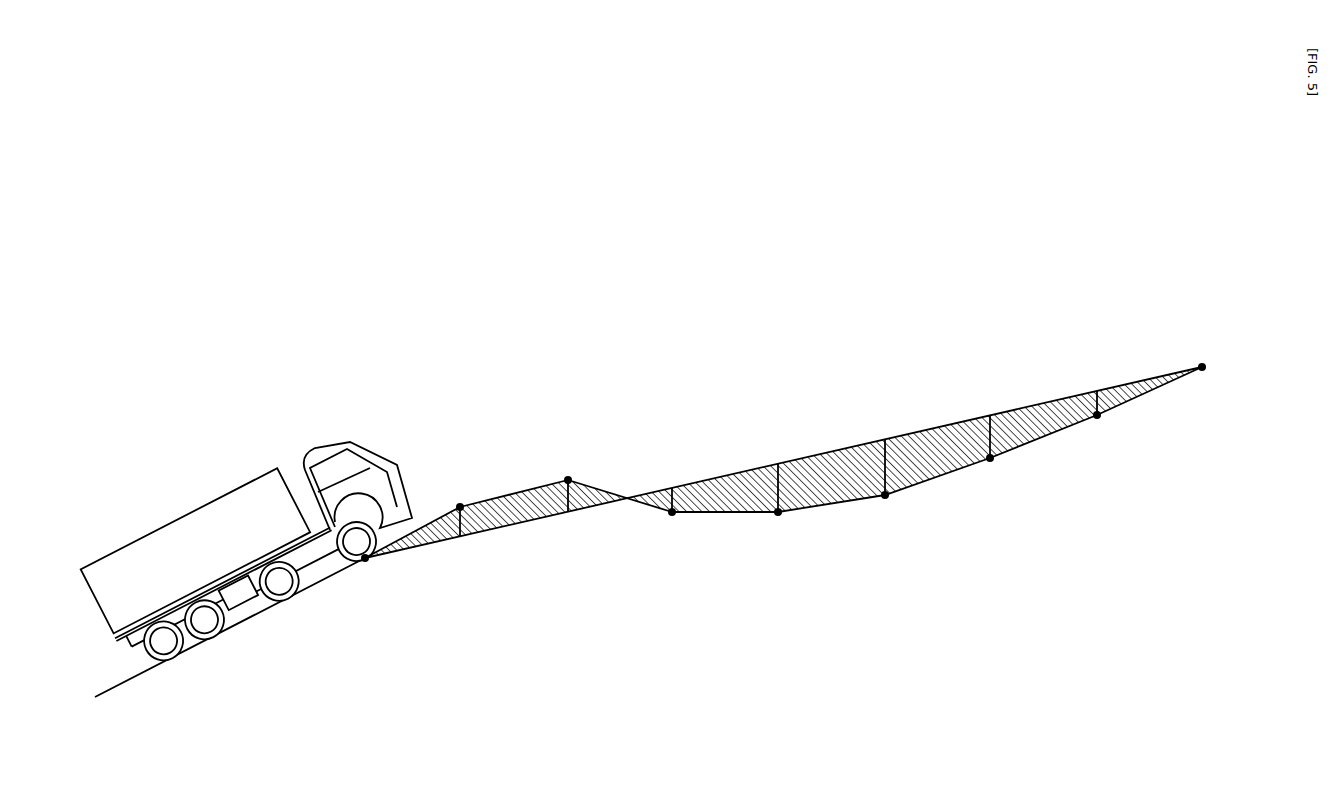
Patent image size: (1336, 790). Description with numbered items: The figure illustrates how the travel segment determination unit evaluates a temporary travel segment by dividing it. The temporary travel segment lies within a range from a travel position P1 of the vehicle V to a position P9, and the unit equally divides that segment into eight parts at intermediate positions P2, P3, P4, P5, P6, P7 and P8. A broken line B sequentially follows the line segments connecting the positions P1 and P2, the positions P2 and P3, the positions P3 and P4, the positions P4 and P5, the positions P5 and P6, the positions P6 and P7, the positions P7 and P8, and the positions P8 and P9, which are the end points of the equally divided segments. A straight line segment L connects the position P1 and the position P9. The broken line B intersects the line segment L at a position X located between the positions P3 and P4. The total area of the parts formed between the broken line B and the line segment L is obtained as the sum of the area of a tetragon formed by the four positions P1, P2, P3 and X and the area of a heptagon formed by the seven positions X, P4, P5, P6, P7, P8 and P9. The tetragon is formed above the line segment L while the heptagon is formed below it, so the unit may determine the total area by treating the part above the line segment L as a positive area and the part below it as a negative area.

The vehicle V is at (338, 440).
The broken line B is at (492, 500).
The line segment L is at (913, 428).
The position X is at (628, 495).
The travel position P1 is at (367, 575).
The position P2 is at (460, 504).
The position P3 is at (568, 479).
The position P4 is at (672, 519).
The position P5 is at (778, 507).
The position P6 is at (885, 486).
The position P7 is at (990, 456).
The position P8 is at (1097, 422).
The position P9 is at (1203, 385).